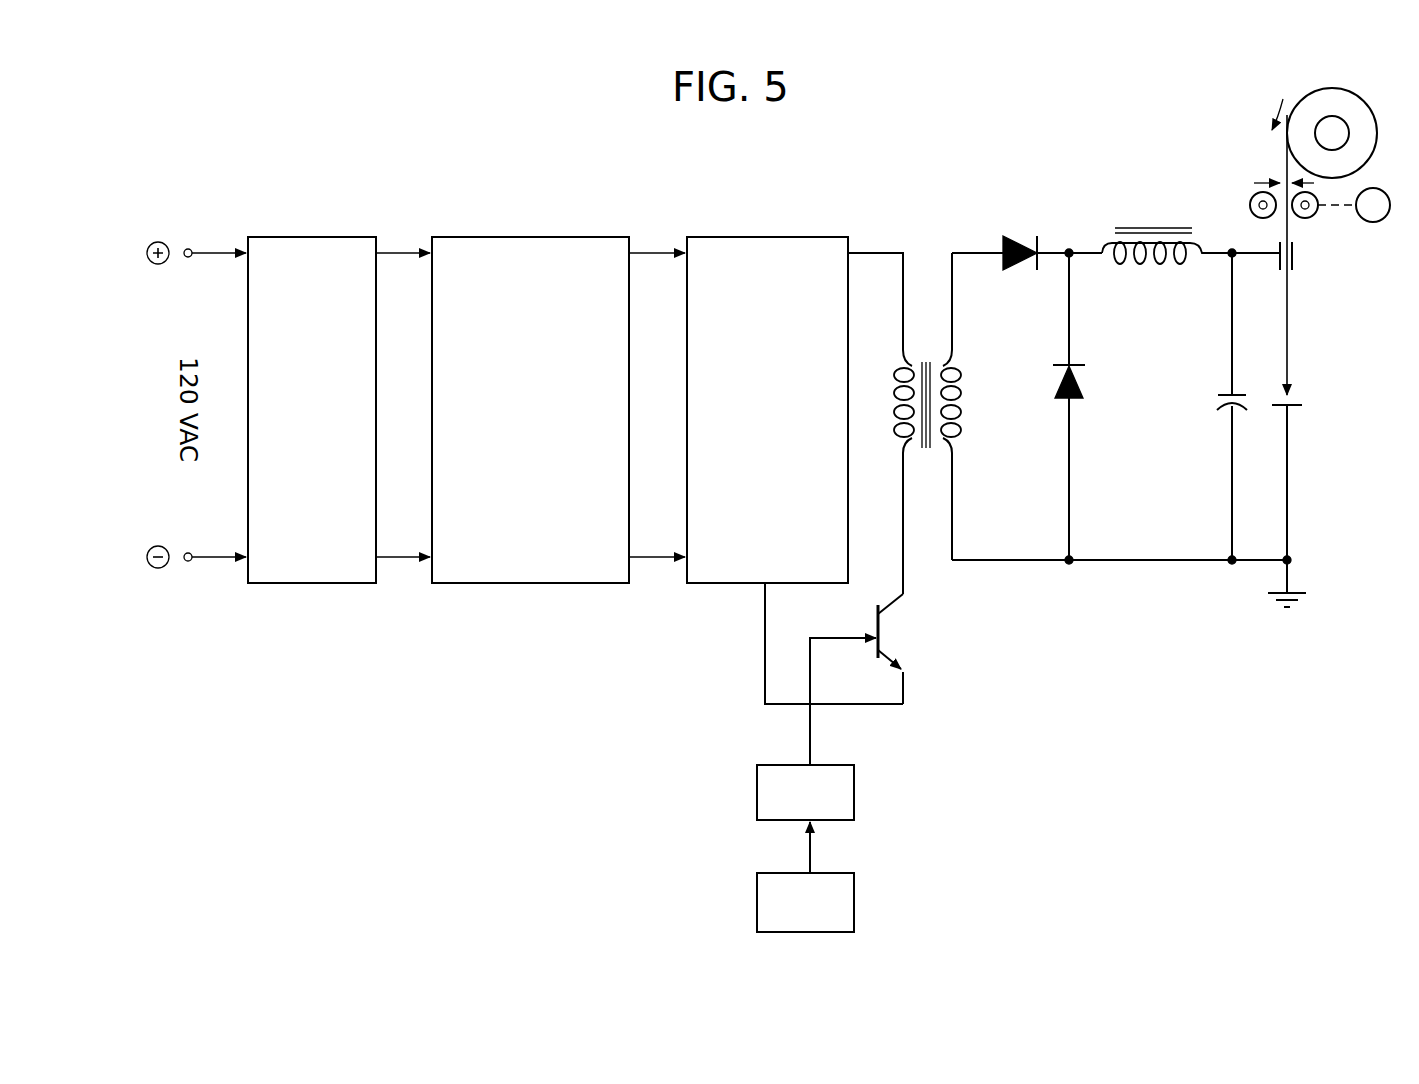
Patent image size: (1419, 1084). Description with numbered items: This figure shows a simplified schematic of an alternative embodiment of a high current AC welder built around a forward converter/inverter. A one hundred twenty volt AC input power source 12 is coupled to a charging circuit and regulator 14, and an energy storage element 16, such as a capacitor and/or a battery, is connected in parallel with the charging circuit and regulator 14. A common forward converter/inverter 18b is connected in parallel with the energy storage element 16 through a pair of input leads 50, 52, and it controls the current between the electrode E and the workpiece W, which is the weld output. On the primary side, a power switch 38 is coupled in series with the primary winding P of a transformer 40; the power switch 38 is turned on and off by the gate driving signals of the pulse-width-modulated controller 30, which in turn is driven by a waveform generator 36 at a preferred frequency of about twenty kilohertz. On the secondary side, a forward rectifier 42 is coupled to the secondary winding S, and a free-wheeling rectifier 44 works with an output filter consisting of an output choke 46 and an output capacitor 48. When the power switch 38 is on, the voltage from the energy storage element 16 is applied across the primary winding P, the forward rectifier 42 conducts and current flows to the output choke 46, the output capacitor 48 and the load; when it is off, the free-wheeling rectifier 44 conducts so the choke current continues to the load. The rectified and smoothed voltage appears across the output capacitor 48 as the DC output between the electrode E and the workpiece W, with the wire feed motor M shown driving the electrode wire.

The input power source 12 is at (305, 236).
The charging circuit and regulator 14 is at (531, 236).
The energy storage element 16 is at (769, 236).
The input lead 50 is at (887, 252).
The transformer 40 is at (982, 406).
The forward rectifier 42 is at (1022, 233).
The free-wheeling rectifier 44 is at (1088, 381).
The output choke 46 is at (1149, 224).
The output capacitor 48 is at (1221, 416).
The forward converter/inverter 18b is at (987, 572).
The power switch 38 is at (880, 625).
The input lead 52 is at (763, 633).
The pulse-width-modulated controller 30 is at (855, 790).
The waveform generator 36 is at (855, 890).
The primary winding P is at (895, 436).
The secondary winding S is at (962, 436).
The electrode E is at (1299, 386).
The workpiece W is at (1302, 411).
The wire feed motor M is at (1373, 205).